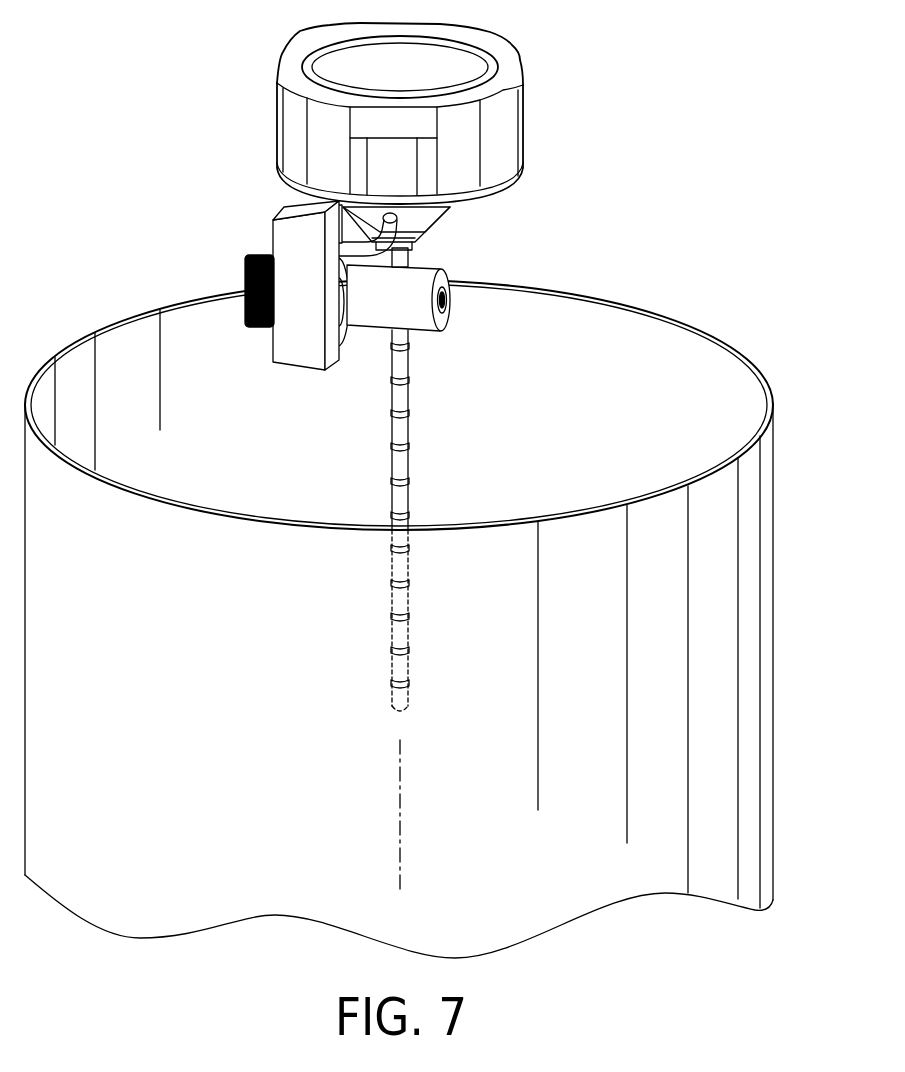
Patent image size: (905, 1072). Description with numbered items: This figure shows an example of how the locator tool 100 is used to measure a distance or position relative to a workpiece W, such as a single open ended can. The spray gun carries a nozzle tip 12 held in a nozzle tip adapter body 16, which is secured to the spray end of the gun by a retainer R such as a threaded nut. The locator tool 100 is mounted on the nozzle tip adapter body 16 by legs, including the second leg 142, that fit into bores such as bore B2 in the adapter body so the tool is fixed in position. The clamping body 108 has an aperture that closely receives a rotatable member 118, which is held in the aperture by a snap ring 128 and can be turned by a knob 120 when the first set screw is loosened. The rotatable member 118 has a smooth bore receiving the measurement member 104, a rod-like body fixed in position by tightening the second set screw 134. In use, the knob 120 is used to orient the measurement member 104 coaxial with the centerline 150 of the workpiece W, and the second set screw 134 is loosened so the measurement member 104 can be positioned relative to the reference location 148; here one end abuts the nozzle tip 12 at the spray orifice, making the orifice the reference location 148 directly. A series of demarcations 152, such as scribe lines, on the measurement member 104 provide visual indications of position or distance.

The retainer R is at (528, 110).
The second leg 142 is at (324, 243).
The knob 120 is at (247, 268).
The bore B2 is at (430, 228).
The nozzle tip adapter body 16 is at (421, 232).
The nozzle tip 12 is at (417, 252).
The reference location 148 is at (397, 268).
The workpiece W is at (665, 340).
The second set screw 134 is at (450, 300).
The rotatable member 118 is at (413, 314).
The clamping body 108 is at (291, 348).
The snap ring 128 is at (343, 348).
The demarcations 152 is at (410, 380).
The measurement member 104 is at (420, 437).
The locator tool 100 is at (280, 411).
The centerline 150 is at (404, 812).